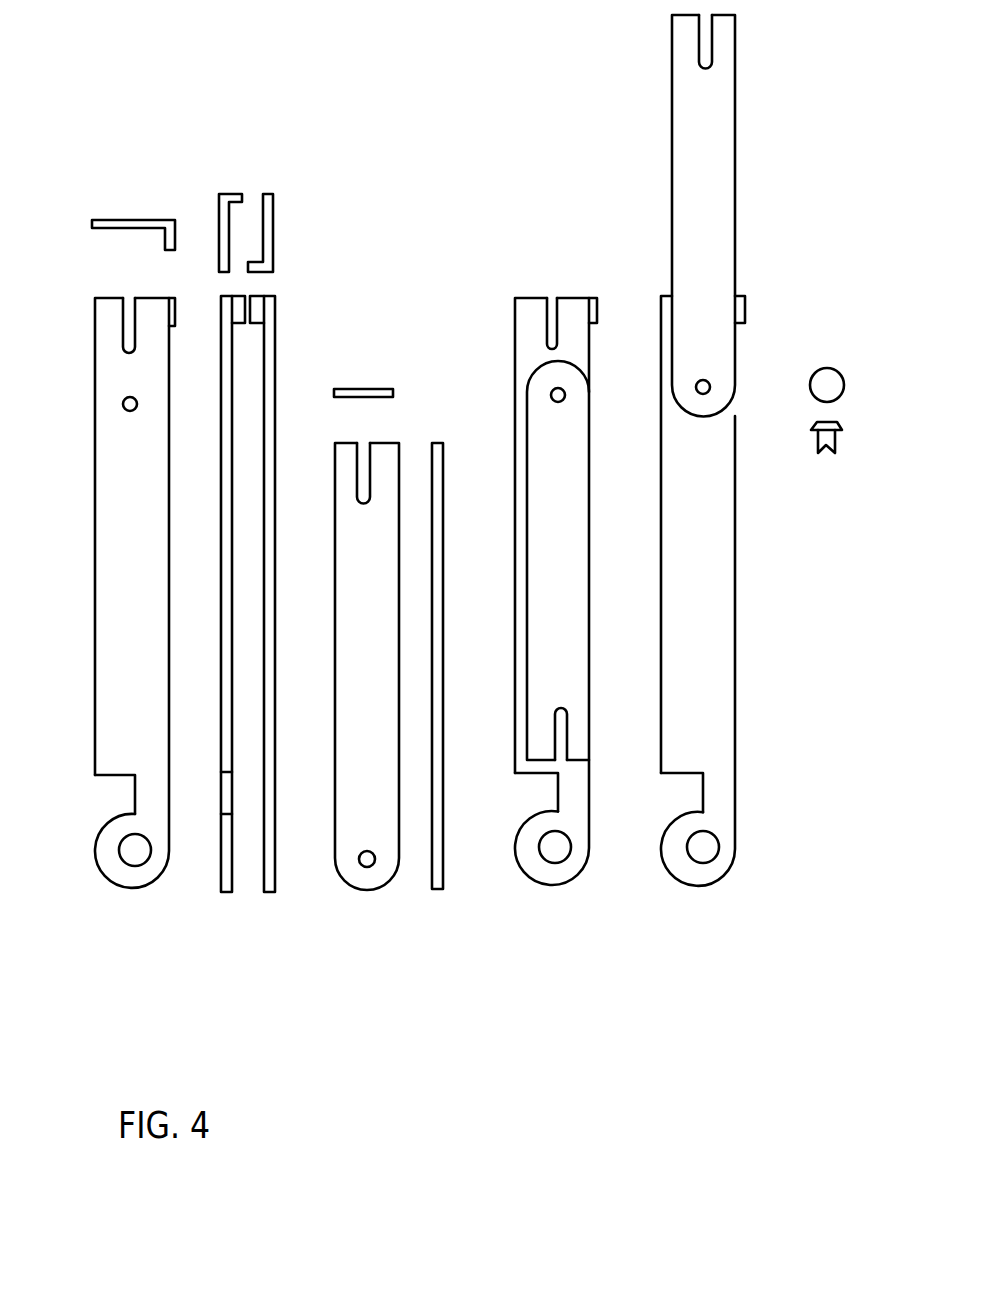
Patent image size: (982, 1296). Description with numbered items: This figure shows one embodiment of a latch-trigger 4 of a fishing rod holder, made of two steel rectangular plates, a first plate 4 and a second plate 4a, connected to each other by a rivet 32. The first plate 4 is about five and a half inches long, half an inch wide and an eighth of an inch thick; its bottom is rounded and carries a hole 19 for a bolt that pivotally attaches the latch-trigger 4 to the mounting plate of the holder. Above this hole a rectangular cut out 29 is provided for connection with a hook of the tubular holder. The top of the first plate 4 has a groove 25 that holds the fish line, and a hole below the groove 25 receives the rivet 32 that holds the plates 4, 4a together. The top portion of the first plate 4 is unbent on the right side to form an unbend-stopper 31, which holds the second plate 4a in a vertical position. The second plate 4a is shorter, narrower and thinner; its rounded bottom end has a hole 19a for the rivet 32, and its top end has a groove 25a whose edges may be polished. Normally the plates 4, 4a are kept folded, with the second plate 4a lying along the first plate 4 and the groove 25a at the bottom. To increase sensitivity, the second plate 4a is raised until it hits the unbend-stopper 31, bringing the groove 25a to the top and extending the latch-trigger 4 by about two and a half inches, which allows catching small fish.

The plate 4 is at (163, 502).
The second plate 4a is at (341, 627).
The hole 19 is at (135, 856).
The hole 19a is at (137, 404).
The groove 25 is at (130, 223).
The groove 25a is at (360, 392).
The rectangular cut out 29 is at (133, 792).
The unbend-stopper 31 is at (171, 316).
The rivet 32 is at (565, 395).